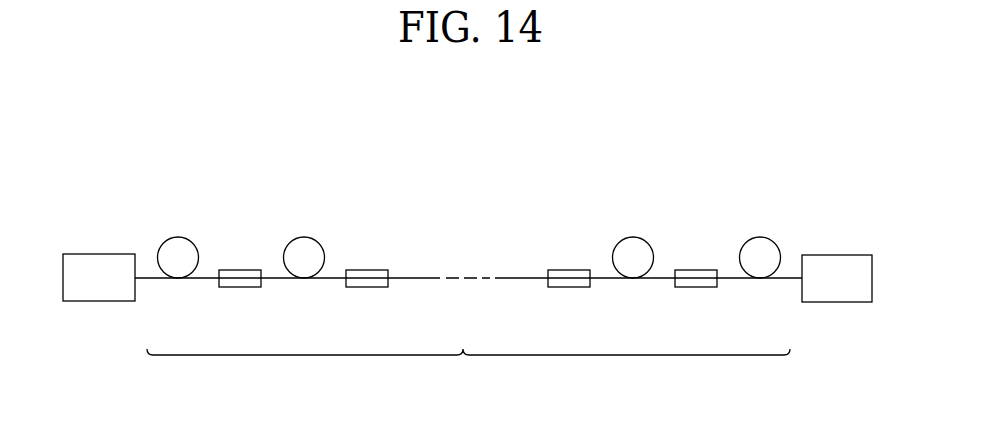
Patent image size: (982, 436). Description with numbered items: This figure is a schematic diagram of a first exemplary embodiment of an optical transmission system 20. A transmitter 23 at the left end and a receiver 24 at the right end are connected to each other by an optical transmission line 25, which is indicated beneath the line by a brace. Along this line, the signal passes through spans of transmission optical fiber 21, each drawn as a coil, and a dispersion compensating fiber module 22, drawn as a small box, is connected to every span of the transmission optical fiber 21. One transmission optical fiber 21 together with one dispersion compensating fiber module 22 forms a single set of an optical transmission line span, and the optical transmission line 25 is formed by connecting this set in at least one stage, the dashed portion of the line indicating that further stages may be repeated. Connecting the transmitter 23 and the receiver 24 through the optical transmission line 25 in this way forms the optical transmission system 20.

The optical transmission system 20 is at (458, 198).
The transmission optical fiber 21 is at (175, 236).
The dispersion compensating fiber module 22 is at (241, 288).
The transmitter 23 is at (97, 254).
The receiver 24 is at (832, 255).
The optical transmission line 25 is at (468, 373).